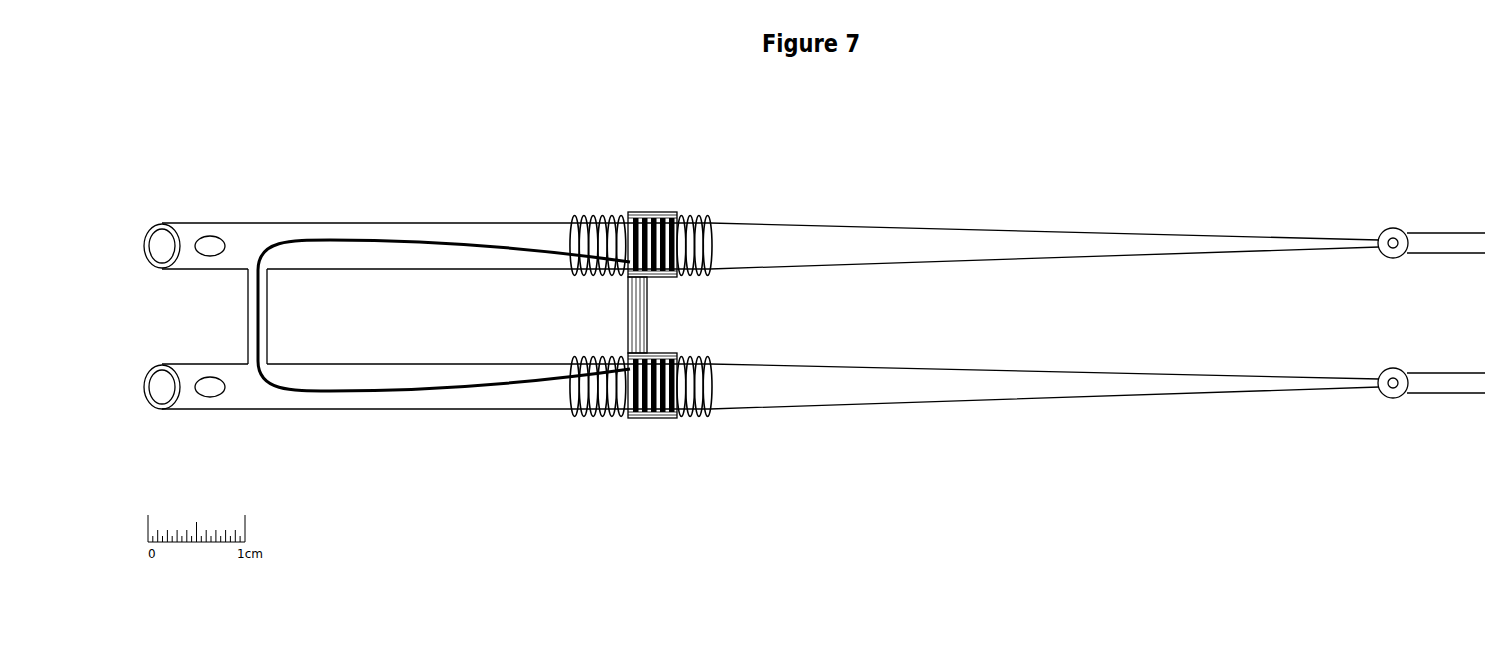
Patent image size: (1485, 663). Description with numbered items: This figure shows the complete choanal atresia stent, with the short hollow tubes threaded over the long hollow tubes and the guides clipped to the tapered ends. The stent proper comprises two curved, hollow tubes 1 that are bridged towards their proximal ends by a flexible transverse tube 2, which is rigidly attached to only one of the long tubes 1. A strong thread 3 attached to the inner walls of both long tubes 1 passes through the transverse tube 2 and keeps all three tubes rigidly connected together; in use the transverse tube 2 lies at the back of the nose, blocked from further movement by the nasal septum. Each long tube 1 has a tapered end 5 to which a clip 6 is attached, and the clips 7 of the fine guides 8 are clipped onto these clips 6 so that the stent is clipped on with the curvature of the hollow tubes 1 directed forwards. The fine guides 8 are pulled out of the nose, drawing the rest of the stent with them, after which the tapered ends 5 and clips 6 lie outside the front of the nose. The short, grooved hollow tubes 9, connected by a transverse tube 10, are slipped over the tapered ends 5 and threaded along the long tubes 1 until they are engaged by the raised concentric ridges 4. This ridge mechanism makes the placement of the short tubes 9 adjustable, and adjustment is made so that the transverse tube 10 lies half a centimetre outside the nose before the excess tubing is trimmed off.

The curved hollow tube 1 is at (254, 221).
The flexible transverse tube 2 is at (246, 327).
The strong thread 3 is at (415, 237).
The raised concentric ridges 4 is at (586, 212).
The tapered end 5 is at (1067, 262).
The clip 6 is at (1382, 257).
The clip 7 is at (1393, 313).
The fine guide 8 is at (1433, 259).
The short grooved hollow tube 9 is at (661, 206).
The transverse tube 10 is at (652, 327).